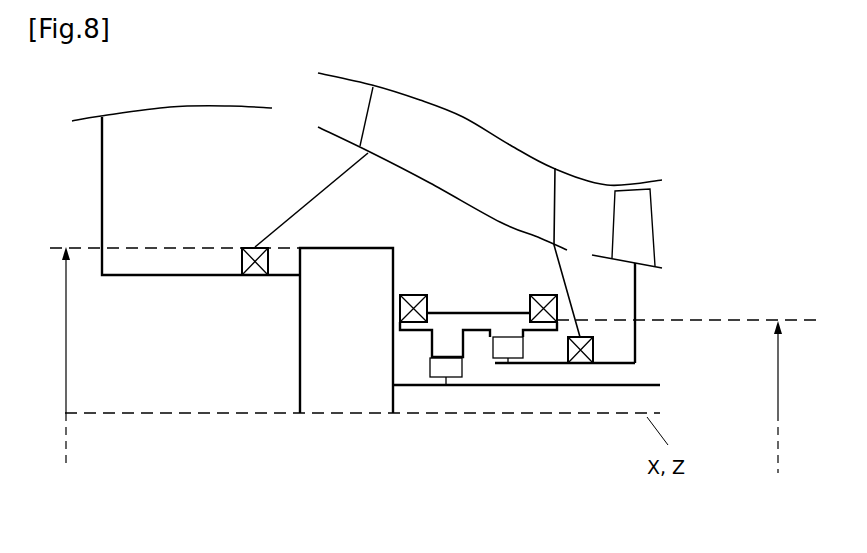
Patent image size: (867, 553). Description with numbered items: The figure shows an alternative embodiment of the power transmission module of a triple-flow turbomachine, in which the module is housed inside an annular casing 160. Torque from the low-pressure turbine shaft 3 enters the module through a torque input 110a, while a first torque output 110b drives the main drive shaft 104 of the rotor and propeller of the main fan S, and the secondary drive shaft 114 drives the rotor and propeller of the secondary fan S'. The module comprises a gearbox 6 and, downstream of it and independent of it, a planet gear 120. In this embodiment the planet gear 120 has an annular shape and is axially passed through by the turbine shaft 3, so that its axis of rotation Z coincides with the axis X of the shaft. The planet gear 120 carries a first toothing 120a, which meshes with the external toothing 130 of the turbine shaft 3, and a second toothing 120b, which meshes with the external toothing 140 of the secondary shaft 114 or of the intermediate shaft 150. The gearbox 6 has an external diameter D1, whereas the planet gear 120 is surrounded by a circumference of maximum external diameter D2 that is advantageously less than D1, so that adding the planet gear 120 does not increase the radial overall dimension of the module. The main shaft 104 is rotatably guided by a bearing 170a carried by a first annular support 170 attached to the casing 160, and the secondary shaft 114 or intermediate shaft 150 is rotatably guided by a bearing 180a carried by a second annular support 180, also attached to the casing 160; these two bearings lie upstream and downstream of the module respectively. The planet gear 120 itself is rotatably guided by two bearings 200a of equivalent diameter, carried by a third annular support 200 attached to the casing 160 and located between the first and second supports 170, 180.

The low-pressure shaft 3 is at (652, 383).
The gearbox 6 is at (350, 395).
The main drive shaft 104 is at (150, 277).
The torque input 110a is at (400, 388).
The first torque output 110b is at (297, 280).
The secondary drive shaft 114 is at (640, 318).
The planet gear 120 is at (403, 294).
The first toothing 120a is at (448, 355).
The second toothing 120b is at (480, 323).
The external toothing of the turbine shaft 130 is at (440, 368).
The external toothing of the secondary shaft 140 is at (510, 356).
The intermediate shaft 150 is at (610, 363).
The annular casing 160 is at (467, 114).
The first annular support 170 is at (317, 193).
The bearing 170a is at (240, 262).
The second annular support 180 is at (563, 272).
The bearing 180a is at (596, 352).
The third annular support 200 is at (475, 300).
The bearings 200a is at (400, 311).
The main fan S is at (177, 90).
The secondary fan S' is at (639, 196).
The external diameter of the gearbox D1 is at (53, 357).
The maximum external diameter of the planet gear D2 is at (792, 397).